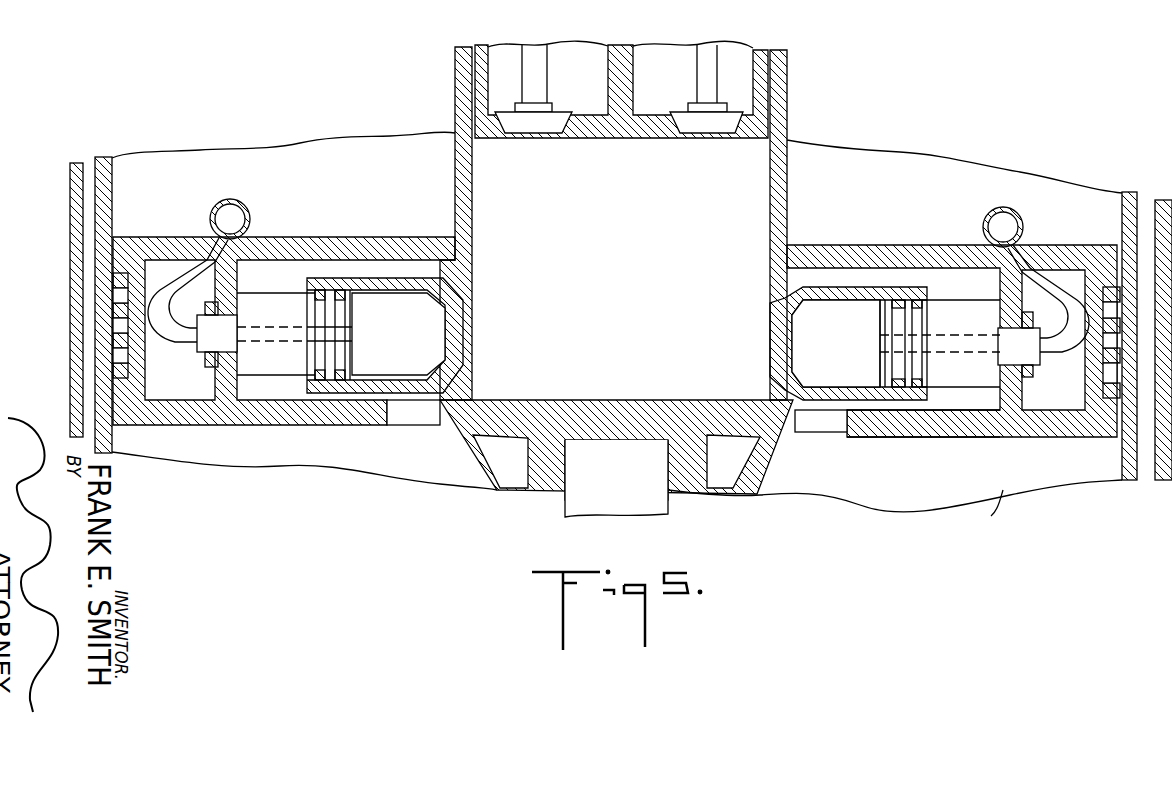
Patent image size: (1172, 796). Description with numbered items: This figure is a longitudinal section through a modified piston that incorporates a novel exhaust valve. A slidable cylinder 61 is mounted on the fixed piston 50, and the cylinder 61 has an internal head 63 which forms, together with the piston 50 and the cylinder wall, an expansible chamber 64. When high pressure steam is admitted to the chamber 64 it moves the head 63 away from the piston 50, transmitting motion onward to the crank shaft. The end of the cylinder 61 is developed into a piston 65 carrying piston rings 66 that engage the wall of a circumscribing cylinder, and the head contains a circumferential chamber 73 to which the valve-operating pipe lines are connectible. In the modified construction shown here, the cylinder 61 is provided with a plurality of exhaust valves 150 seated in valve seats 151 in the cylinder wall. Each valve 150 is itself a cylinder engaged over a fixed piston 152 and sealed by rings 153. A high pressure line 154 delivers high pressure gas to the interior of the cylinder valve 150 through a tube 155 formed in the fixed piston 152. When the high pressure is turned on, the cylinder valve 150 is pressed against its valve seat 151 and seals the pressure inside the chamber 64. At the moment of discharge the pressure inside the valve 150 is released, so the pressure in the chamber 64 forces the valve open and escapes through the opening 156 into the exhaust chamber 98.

The fixed piston 50 is at (616, 128).
The slidable cylinder 61 is at (768, 182).
The head 63 is at (582, 412).
The expansible chamber 64 is at (633, 257).
The piston 65 is at (1048, 428).
The piston rings 66 is at (110, 285).
The circumferential chamber 73 is at (183, 382).
The chamber 98 is at (973, 485).
The exhaust valve 150 is at (858, 300).
The valve seat 151 is at (766, 298).
The fixed piston 152 is at (977, 329).
The rings 153 is at (921, 400).
The high pressure line 154 is at (1020, 223).
The tube 155 is at (880, 340).
The opening 156 is at (822, 423).